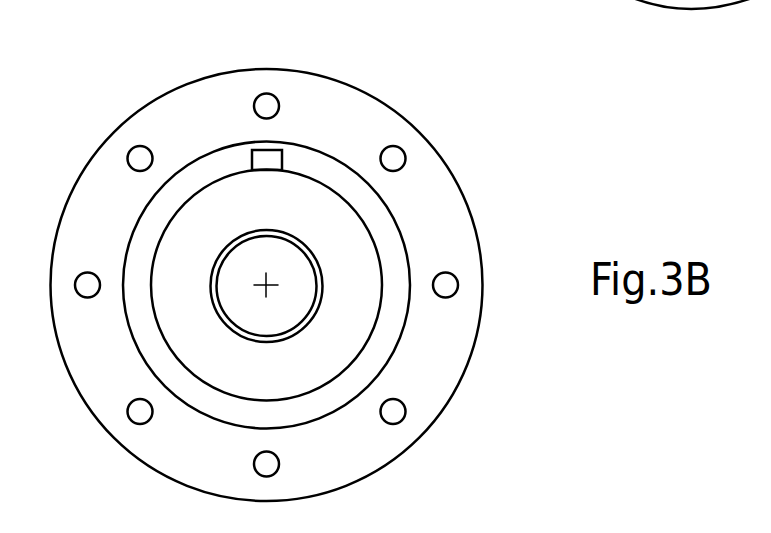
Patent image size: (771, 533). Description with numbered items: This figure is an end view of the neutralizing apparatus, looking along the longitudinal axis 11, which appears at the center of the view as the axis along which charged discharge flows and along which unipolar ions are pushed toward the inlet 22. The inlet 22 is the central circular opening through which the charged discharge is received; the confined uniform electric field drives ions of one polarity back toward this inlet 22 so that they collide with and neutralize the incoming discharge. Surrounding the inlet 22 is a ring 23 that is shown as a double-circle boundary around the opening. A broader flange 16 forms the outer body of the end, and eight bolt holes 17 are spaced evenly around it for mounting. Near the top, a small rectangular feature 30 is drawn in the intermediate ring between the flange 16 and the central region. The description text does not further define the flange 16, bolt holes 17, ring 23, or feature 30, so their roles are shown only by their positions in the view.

The longitudinal axis 11 is at (265, 283).
The flange 16 is at (442, 227).
The bolt holes 17 is at (268, 98).
The inlet 22 is at (257, 302).
The hub ring 23 is at (210, 272).
The key slot 30 is at (253, 157).